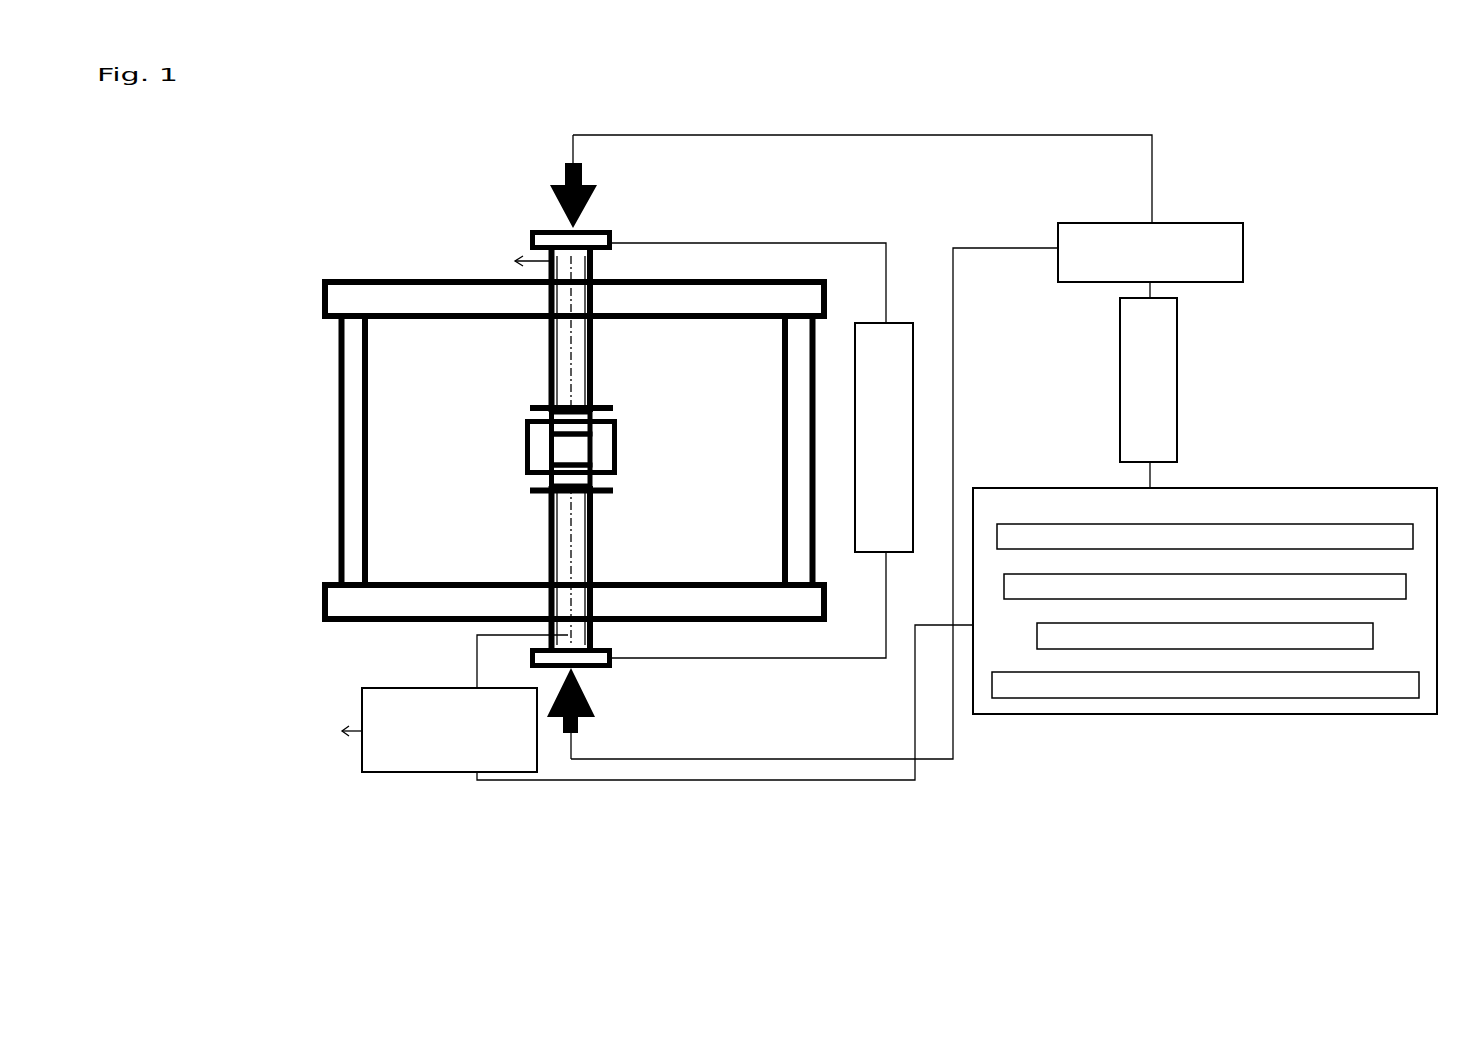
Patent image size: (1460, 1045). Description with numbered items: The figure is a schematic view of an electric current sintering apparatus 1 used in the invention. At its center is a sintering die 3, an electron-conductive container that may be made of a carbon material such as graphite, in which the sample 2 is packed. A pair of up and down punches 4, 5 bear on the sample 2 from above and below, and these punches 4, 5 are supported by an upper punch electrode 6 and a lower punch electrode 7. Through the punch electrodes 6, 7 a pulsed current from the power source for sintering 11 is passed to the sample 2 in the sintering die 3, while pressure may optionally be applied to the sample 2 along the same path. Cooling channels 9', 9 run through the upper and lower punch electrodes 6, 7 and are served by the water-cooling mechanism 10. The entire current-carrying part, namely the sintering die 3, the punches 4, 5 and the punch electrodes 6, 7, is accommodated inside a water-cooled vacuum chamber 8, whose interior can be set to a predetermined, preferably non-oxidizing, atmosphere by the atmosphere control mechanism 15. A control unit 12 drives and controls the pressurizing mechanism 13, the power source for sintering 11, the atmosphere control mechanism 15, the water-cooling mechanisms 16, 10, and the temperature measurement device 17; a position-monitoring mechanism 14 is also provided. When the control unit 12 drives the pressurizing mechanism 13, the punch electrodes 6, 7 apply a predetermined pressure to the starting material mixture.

The electric current sintering apparatus 1 is at (775, 457).
The sample 2 is at (568, 447).
The sintering die 3 is at (600, 443).
The punch 4 is at (572, 428).
The punch 5 is at (572, 470).
The punch electrode 6 is at (562, 385).
The punch electrode 7 is at (562, 508).
The water-cooled vacuum chamber 8 is at (352, 528).
The cooling channel 9 is at (486, 565).
The cooling channel 9' is at (486, 334).
The water-cooling mechanism 10 is at (449, 730).
The power source for sintering 11 is at (884, 437).
The control unit 12 is at (1148, 380).
The pressurizing mechanism 13 is at (1150, 252).
The position-monitoring mechanism 14 is at (1205, 536).
The atmosphere control mechanism 15 is at (1205, 586).
The water-cooling mechanism 16 is at (1205, 636).
The temperature measurement device 17 is at (1205, 685).